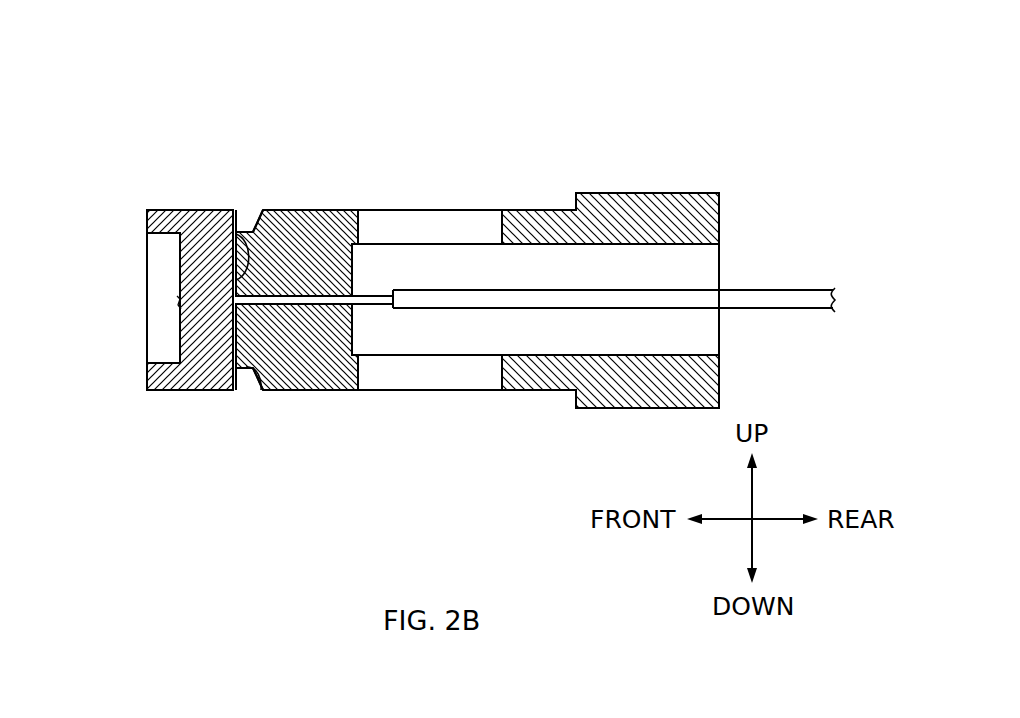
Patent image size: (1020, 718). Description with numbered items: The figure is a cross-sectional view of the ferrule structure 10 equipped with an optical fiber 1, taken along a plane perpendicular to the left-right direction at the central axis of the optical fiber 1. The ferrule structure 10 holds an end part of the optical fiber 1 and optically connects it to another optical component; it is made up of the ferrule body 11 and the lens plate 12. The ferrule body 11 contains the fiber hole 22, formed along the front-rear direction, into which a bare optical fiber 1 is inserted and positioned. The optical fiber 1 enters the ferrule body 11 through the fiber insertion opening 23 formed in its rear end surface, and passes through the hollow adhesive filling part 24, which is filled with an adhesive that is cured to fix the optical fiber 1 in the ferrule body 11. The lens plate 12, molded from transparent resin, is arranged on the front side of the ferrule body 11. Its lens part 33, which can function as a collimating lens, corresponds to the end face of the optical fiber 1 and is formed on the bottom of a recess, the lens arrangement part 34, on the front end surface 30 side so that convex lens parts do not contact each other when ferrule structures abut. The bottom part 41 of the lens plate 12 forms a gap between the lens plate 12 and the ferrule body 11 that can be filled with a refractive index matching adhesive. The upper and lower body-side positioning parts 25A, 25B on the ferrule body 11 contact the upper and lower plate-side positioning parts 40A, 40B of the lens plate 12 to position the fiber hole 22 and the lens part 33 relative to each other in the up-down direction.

The ferrule structure 10 is at (379, 113).
The ferrule body 11 is at (553, 180).
The lens plate 12 is at (168, 181).
The fiber hole 22 is at (296, 292).
The fiber insertion opening 23 is at (720, 263).
The adhesive filling part 24 is at (450, 205).
The body-side positioning part 25A is at (258, 225).
The body-side positioning part 25B is at (258, 377).
The front end surface 30 is at (146, 212).
The lens part 33 is at (177, 298).
The lens arrangement part 34 is at (144, 348).
The plate-side positioning part 40A is at (252, 233).
The plate-side positioning part 40B is at (262, 375).
The bottom part 41 is at (235, 238).
The optical fiber 1 is at (787, 297).